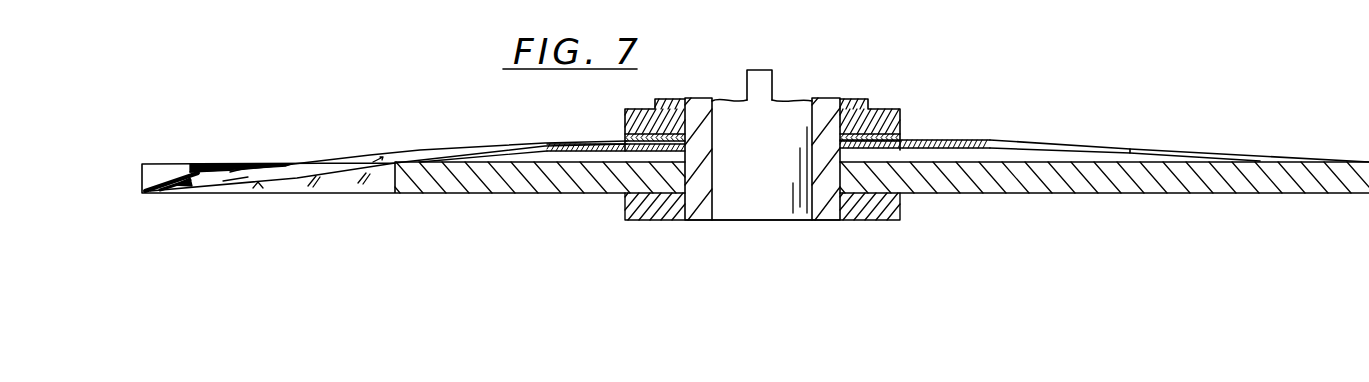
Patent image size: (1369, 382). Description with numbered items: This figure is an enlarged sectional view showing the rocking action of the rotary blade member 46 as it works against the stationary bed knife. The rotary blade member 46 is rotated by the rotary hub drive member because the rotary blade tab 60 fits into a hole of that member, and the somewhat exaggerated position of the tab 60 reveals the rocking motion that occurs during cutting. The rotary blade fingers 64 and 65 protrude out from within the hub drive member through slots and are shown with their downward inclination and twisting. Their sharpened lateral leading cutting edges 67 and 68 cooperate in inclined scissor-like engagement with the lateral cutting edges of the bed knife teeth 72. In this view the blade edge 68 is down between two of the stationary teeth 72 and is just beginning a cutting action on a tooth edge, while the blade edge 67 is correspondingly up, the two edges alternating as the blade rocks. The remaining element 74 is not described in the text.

The rotary blade member 46 is at (556, 143).
The rotary blade tab 60 is at (773, 80).
The rotary blade finger 64 is at (288, 166).
The rotary blade finger 65 is at (1086, 138).
The sharpened lateral leading cutting edge 67 is at (1249, 156).
The sharpened lateral leading cutting edge 68 is at (337, 173).
The bed knife tooth 72 is at (286, 185).
The edge 74 is at (183, 163).